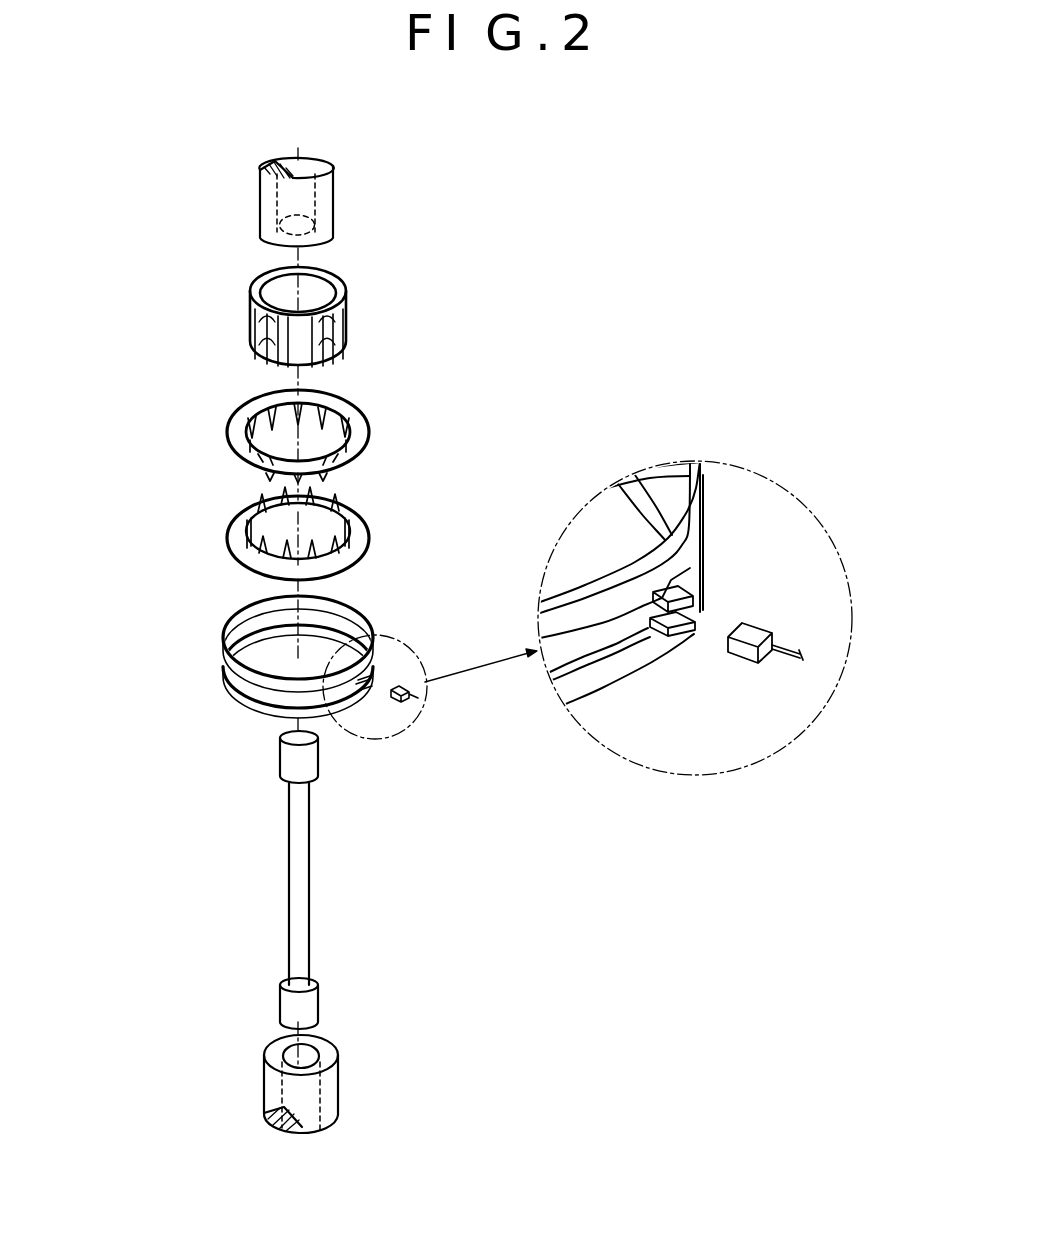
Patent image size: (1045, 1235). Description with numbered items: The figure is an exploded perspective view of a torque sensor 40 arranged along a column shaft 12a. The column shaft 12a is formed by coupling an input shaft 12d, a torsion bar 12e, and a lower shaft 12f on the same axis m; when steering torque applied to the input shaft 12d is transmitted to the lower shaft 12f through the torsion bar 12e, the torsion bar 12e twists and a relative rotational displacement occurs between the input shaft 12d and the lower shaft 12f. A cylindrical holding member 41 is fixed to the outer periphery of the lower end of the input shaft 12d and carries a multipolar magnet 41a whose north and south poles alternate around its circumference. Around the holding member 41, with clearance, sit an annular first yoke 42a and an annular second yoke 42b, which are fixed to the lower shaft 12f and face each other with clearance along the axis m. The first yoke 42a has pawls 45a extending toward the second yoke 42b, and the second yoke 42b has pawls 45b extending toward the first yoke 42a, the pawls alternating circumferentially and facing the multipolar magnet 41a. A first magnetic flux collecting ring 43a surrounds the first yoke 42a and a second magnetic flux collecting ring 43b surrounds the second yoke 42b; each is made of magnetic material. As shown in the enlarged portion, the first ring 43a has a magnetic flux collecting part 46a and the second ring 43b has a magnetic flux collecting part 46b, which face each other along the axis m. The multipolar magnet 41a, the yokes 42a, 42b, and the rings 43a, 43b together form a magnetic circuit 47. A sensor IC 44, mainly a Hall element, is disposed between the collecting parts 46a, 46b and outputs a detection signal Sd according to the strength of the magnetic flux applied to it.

The column shaft 12a is at (374, 645).
The input shaft 12d is at (335, 207).
The torsion bar 12e is at (310, 880).
The lower shaft 12f is at (338, 1083).
The torque sensor 40 is at (124, 571).
The holding member 41 is at (333, 266).
The multipolar magnet 41a is at (343, 313).
The axis m is at (285, 262).
The magnetic circuit 47 is at (448, 531).
The first yoke 42a is at (372, 440).
The second yoke 42b is at (372, 540).
The pawls 45a is at (333, 422).
The pawls 45b is at (338, 517).
The first magnetic flux collecting ring 43a is at (222, 650).
The second magnetic flux collecting ring 43b is at (248, 711).
The sensor IC 44 is at (398, 712).
The magnetic flux collecting part 46a is at (700, 596).
The magnetic flux collecting part 46b is at (692, 640).
The detection signal Sd is at (849, 680).